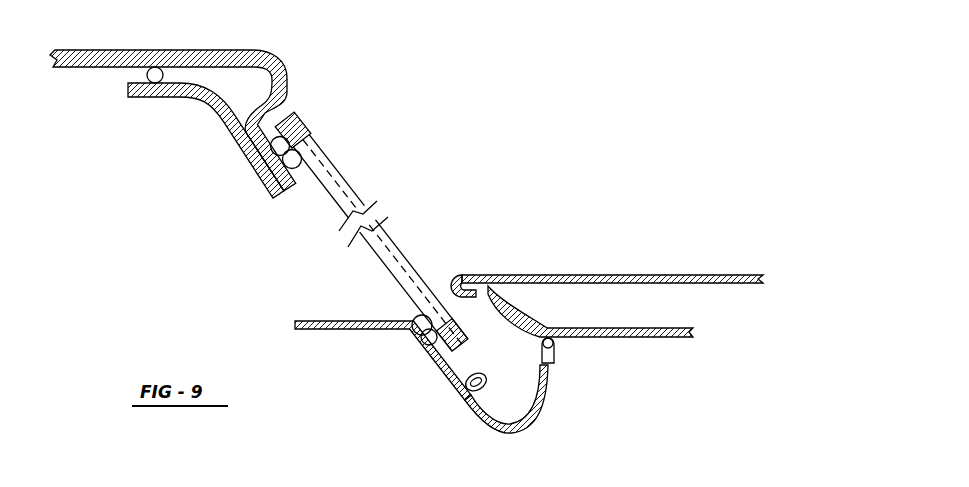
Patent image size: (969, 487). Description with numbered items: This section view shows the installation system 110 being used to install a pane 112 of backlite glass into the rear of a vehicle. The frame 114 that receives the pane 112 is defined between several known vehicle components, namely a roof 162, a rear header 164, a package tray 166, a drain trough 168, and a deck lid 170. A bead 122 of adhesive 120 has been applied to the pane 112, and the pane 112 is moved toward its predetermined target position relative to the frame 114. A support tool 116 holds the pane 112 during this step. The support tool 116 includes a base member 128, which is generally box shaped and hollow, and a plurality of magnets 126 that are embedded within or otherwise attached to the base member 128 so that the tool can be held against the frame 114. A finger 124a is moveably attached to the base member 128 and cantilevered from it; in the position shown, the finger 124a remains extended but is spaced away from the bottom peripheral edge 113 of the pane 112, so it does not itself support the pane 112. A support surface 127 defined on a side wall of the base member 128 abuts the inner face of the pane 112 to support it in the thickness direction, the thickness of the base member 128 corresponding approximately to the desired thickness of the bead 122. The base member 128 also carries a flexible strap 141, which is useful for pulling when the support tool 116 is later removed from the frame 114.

The installation system 110 is at (172, 32).
The pane 112 is at (355, 176).
The bottom peripheral edge 113 is at (482, 338).
The frame 114 is at (333, 335).
The support tool 116 is at (508, 368).
The adhesive 120 is at (287, 141).
The bead 122 is at (318, 146).
The finger 124a is at (465, 353).
The magnets 126 is at (443, 385).
The support surface 127 is at (464, 340).
The base member 128 is at (462, 402).
The flexible strap 141 is at (483, 380).
The roof 162 is at (243, 48).
The rear header 164 is at (210, 113).
The package tray 166 is at (373, 331).
The drain trough 168 is at (537, 417).
The deck lid 170 is at (526, 314).